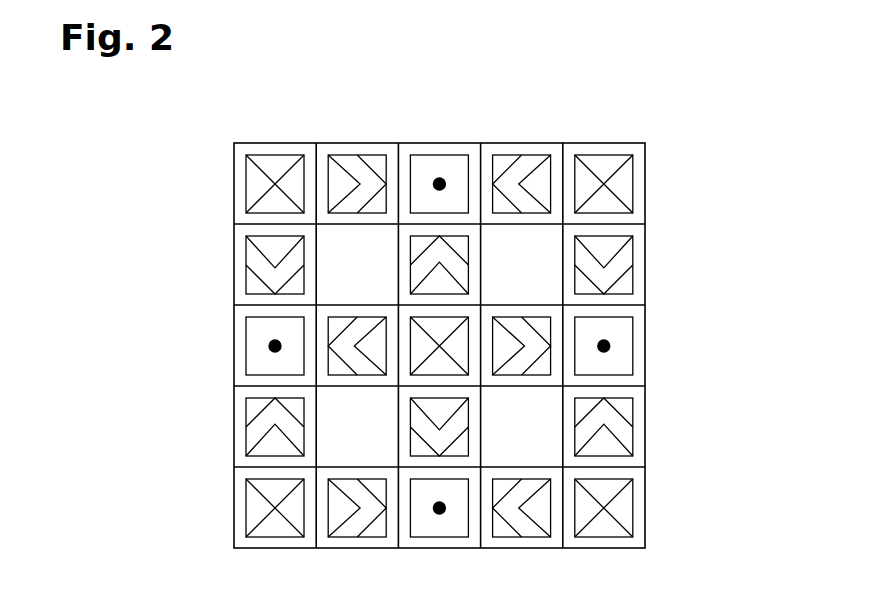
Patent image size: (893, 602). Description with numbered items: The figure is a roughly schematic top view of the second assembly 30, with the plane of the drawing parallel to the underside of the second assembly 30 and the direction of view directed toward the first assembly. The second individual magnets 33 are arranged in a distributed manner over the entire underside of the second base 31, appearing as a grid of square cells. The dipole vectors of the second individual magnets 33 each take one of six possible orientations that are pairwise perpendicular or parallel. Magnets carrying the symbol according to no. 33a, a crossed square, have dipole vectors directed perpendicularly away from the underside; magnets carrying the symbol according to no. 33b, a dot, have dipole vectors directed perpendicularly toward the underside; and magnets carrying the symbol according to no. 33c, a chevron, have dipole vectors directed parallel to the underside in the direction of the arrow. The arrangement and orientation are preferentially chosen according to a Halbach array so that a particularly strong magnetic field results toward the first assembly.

The second assembly 30 is at (642, 64).
The second base 31 is at (618, 543).
The second individual magnets 33 is at (633, 343).
The symbol for dipole vector directed perpendicularly away from the underside 33a is at (633, 506).
The symbol for dipole vector directed perpendicularly toward the underside 33b is at (440, 143).
The symbol for dipole vector directed parallel to the underside 33c is at (360, 143).